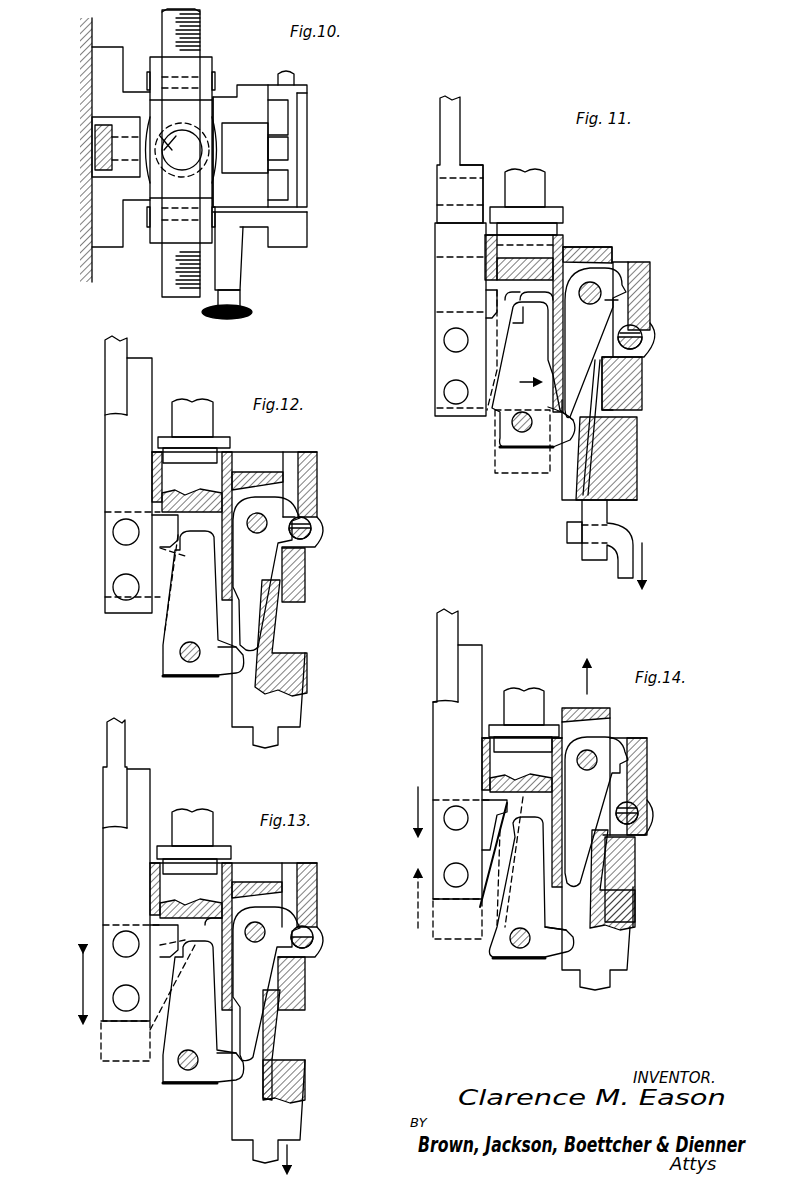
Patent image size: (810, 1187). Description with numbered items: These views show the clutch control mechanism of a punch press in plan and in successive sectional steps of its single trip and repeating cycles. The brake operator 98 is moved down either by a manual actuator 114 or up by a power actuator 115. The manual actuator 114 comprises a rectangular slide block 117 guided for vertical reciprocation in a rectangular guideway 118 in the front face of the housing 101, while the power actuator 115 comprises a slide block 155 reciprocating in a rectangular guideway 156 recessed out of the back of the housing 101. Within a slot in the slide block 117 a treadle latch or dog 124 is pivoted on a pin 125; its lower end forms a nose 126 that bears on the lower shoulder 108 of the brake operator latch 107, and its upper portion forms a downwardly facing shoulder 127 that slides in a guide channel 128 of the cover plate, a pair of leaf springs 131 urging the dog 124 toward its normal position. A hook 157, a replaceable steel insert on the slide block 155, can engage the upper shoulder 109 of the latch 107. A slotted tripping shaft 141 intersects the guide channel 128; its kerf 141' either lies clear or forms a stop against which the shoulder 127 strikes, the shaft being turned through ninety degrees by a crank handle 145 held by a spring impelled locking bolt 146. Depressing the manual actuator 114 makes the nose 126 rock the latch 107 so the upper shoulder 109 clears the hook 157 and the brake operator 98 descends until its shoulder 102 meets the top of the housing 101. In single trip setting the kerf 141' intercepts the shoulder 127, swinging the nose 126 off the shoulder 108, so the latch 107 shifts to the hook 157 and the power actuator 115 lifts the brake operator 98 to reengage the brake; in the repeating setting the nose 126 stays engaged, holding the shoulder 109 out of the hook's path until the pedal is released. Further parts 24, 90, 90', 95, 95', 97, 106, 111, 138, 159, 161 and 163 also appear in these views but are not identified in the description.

In FIG. 10, the wall 24 is at (95, 32).
In FIG. 10, the shaft 90 is at (166, 167).
In FIG. 10, the shaft upper end 90' is at (200, 25).
In FIG. 10, the bearing nut 95 is at (200, 232).
In FIG. 10, the upper bearing nut 95' is at (169, 71).
In FIG. 10, the ball joint 97 is at (175, 140).
In FIG. 10, the housing 101 is at (107, 248).
In FIG. 10, the manual actuator 114 is at (226, 125).
In FIG. 11, the manual actuator 114 is at (604, 245).
In FIG. 12, the manual actuator 114 is at (265, 470).
In FIG. 13, the manual actuator 114 is at (262, 878).
In FIG. 10, the slide block 117 is at (256, 161).
In FIG. 10, the rectangular guideway 118 is at (266, 131).
In FIG. 10, the tripping shaft 141 is at (312, 71).
In FIG. 11, the tripping shaft 141 is at (656, 343).
In FIG. 12, the tripping shaft 141 is at (327, 500).
In FIG. 13, the tripping shaft 141 is at (330, 910).
In FIG. 14, the tripping shaft 141 is at (651, 786).
In FIG. 11, the kerf 141' is at (665, 329).
In FIG. 12, the kerf 141' is at (356, 520).
In FIG. 14, the kerf 141' is at (660, 828).
In FIG. 10, the crank handle 145 is at (238, 258).
In FIG. 10, the locking bolt 146 is at (252, 315).
In FIG. 10, the slide block 155 is at (128, 125).
In FIG. 11, the slide block 155 is at (445, 240).
In FIG. 12, the slide block 155 is at (112, 438).
In FIG. 13, the slide block 155 is at (112, 862).
In FIG. 14, the slide block 155 is at (445, 725).
In FIG. 10, the rectangular guideway 156 is at (125, 170).
In FIG. 11, the hook 157 is at (500, 342).
In FIG. 12, the hook 157 is at (165, 518).
In FIG. 13, the hook 157 is at (170, 927).
In FIG. 14, the hook 157 is at (497, 815).
In FIG. 11, the bracket 159 is at (470, 170).
In FIG. 11, the pin 161 is at (447, 172).
In FIG. 11, the bar 163 is at (440, 135).
In FIG. 12, the bar 163 is at (105, 372).
In FIG. 13, the bar 163 is at (108, 746).
In FIG. 14, the bar 163 is at (452, 628).
In FIG. 11, the power actuator 115 is at (432, 225).
In FIG. 12, the power actuator 115 is at (100, 422).
In FIG. 13, the power actuator 115 is at (98, 827).
In FIG. 14, the power actuator 115 is at (432, 705).
In FIG. 11, the brake operator 98 is at (530, 200).
In FIG. 12, the brake operator 98 is at (200, 432).
In FIG. 13, the brake operator 98 is at (192, 830).
In FIG. 14, the brake operator 98 is at (522, 710).
In FIG. 11, the shoulder 102 is at (555, 216).
In FIG. 12, the shoulder 102 is at (228, 444).
In FIG. 11, the pivot pin 106 is at (522, 432).
In FIG. 12, the pivot pin 106 is at (190, 662).
In FIG. 13, the pivot pin 106 is at (190, 1075).
In FIG. 14, the pivot pin 106 is at (520, 950).
In FIG. 11, the brake operator latch 107 is at (520, 363).
In FIG. 12, the brake operator latch 107 is at (185, 605).
In FIG. 13, the brake operator latch 107 is at (185, 1045).
In FIG. 14, the brake operator latch 107 is at (513, 893).
In FIG. 11, the lower shoulder 108 is at (562, 442).
In FIG. 12, the lower shoulder 108 is at (238, 672).
In FIG. 13, the lower shoulder 108 is at (245, 1075).
In FIG. 14, the lower shoulder 108 is at (568, 942).
In FIG. 11, the upper shoulder 109 is at (512, 305).
In FIG. 12, the upper shoulder 109 is at (176, 545).
In FIG. 13, the upper shoulder 109 is at (182, 977).
In FIG. 14, the upper shoulder 109 is at (520, 800).
In FIG. 11, the plunger stem 111 is at (535, 290).
In FIG. 13, the plunger stem 111 is at (212, 915).
In FIG. 11, the treadle latch 124 is at (600, 320).
In FIG. 12, the treadle latch 124 is at (290, 557).
In FIG. 13, the treadle latch 124 is at (290, 985).
In FIG. 14, the treadle latch 124 is at (600, 780).
In FIG. 11, the pin 125 is at (603, 295).
In FIG. 12, the pin 125 is at (268, 520).
In FIG. 13, the pin 125 is at (265, 930).
In FIG. 14, the pin 125 is at (597, 757).
In FIG. 11, the nose 126 is at (630, 417).
In FIG. 12, the nose 126 is at (268, 645).
In FIG. 13, the nose 126 is at (270, 1060).
In FIG. 14, the nose 126 is at (580, 882).
In FIG. 11, the shoulder 127 is at (614, 302).
In FIG. 12, the shoulder 127 is at (290, 520).
In FIG. 11, the guide channel 128 is at (624, 262).
In FIG. 11, the leaf springs 131 is at (637, 385).
In FIG. 13, the leaf springs 131 is at (275, 1040).
In FIG. 11, the pipe elbow 138 is at (610, 574).